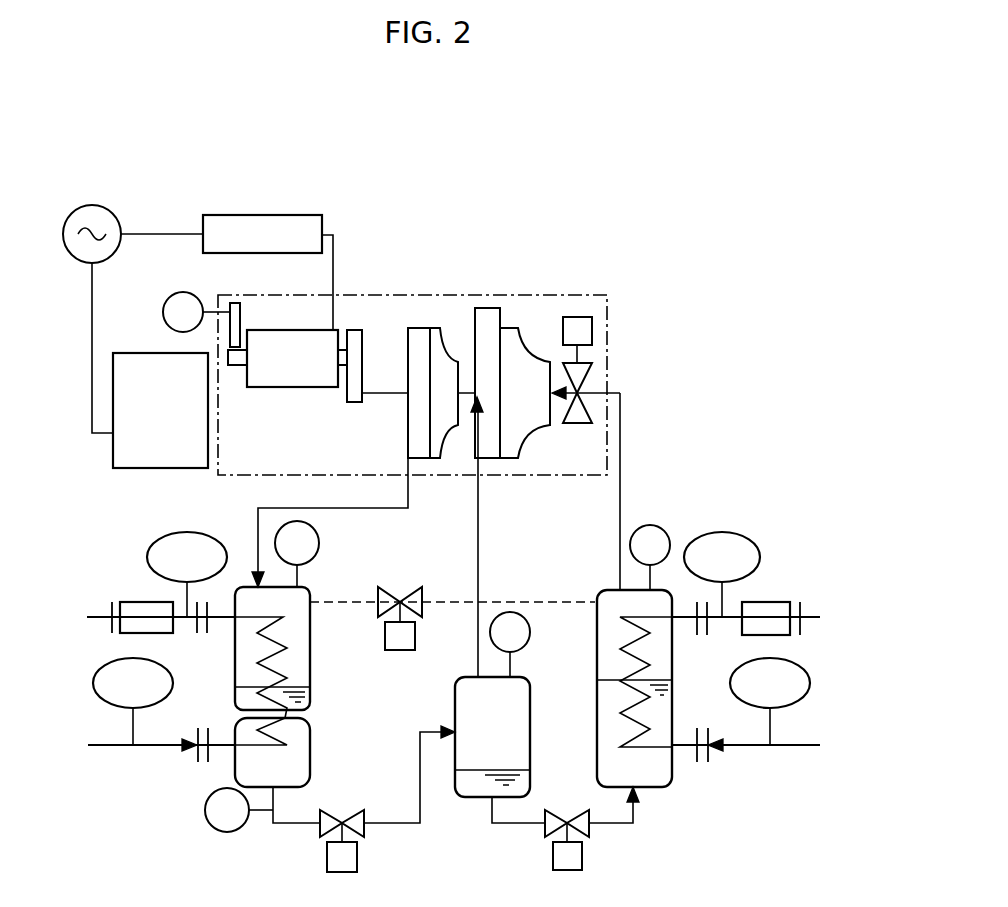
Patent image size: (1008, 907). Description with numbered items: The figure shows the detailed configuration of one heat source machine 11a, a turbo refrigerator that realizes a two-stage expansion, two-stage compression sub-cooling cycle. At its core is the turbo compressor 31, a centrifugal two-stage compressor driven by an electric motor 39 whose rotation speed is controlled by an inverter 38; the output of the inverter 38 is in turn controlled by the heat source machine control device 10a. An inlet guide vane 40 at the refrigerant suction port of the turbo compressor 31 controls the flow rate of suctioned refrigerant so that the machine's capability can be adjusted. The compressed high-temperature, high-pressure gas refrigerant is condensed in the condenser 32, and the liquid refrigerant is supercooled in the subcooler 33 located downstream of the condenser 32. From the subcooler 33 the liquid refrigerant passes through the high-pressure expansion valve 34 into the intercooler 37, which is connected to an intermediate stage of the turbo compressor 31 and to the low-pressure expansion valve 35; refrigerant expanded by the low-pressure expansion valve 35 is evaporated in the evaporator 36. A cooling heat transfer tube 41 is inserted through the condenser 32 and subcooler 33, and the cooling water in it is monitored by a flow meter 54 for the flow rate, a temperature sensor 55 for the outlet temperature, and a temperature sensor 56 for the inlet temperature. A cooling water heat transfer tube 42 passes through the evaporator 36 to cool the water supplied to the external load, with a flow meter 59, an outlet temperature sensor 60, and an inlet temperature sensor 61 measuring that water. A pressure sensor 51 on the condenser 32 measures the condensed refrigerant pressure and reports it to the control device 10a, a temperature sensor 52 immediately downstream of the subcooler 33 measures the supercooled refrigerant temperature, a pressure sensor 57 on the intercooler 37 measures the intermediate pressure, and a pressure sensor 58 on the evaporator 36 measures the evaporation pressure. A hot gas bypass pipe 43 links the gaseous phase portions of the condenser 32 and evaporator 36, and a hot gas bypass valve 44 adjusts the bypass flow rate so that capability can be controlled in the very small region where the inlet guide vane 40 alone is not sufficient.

The heat source machine 11a is at (150, 155).
The heat source machine control device 10a is at (135, 353).
The inverter 38 is at (258, 213).
The turbo compressor 31 is at (448, 374).
The electric motor 39 is at (287, 387).
The inlet guide vane 40 is at (580, 425).
The condenser 32 is at (291, 612).
The cooling heat transfer tube 41 is at (275, 672).
The subcooler 33 is at (313, 745).
The high-pressure expansion valve 34 is at (365, 830).
The low-pressure expansion valve 35 is at (590, 832).
The evaporator 36 is at (611, 658).
The cooling water heat transfer tube 42 is at (618, 645).
The intercooler 37 is at (533, 720).
The hot gas bypass pipe 43 is at (498, 600).
The hot gas bypass valve 44 is at (400, 652).
The pressure sensor 51 is at (319, 543).
The temperature sensor 52 is at (228, 832).
The flow meter 54 is at (125, 600).
The temperature sensor 55 is at (162, 532).
The temperature sensor 56 is at (165, 665).
The pressure sensor 57 is at (530, 630).
The pressure sensor 58 is at (655, 525).
The flow meter 59 is at (782, 600).
The temperature sensor 60 is at (722, 530).
The temperature sensor 61 is at (730, 672).